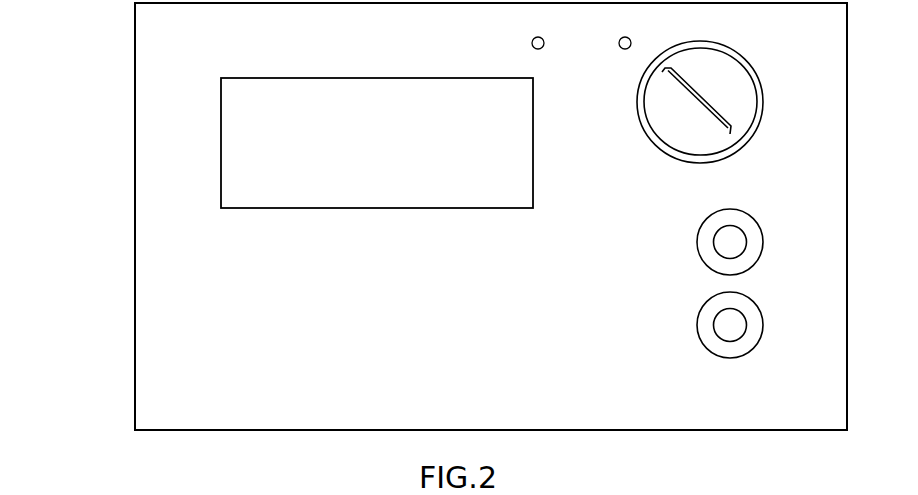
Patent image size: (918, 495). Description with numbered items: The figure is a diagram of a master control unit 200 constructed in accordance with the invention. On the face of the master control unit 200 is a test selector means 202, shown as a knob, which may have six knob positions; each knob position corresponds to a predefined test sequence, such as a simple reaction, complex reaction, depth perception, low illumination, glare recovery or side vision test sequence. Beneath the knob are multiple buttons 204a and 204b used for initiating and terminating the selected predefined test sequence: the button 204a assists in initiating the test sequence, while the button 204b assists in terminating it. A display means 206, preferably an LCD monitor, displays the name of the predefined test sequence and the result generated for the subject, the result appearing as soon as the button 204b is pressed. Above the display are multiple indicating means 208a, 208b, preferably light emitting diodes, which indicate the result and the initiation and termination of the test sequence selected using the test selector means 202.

The master control unit 200 is at (84, 68).
The test selector means 202 is at (744, 58).
The button 204a is at (760, 230).
The button 204b is at (760, 312).
The display means 206 is at (420, 78).
The indicating means 208a is at (538, 37).
The indicating means 208b is at (625, 37).